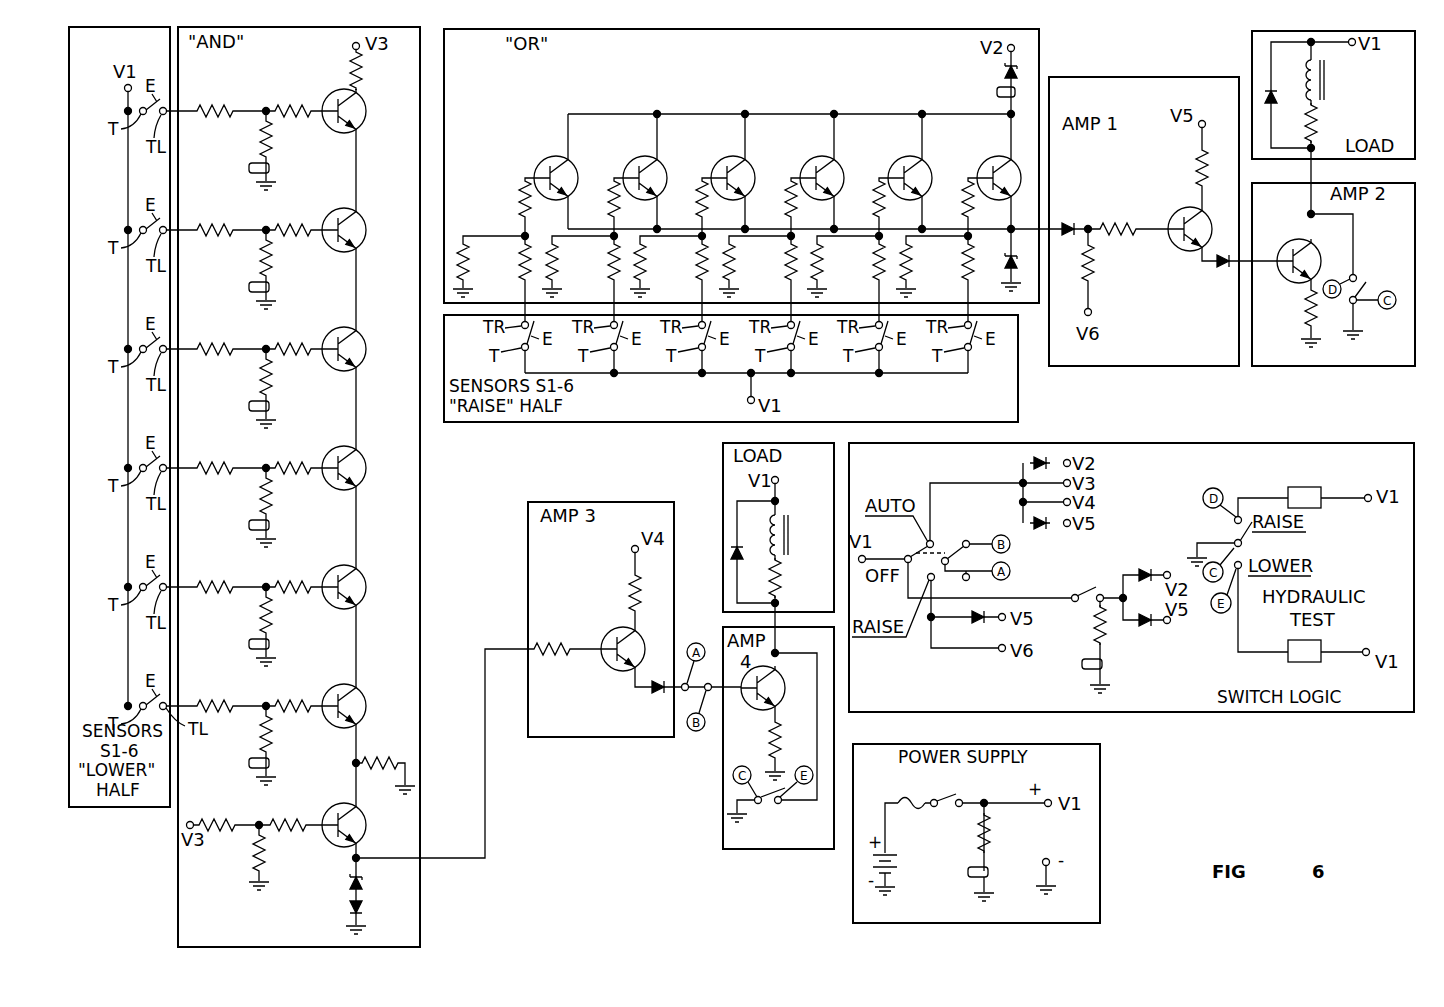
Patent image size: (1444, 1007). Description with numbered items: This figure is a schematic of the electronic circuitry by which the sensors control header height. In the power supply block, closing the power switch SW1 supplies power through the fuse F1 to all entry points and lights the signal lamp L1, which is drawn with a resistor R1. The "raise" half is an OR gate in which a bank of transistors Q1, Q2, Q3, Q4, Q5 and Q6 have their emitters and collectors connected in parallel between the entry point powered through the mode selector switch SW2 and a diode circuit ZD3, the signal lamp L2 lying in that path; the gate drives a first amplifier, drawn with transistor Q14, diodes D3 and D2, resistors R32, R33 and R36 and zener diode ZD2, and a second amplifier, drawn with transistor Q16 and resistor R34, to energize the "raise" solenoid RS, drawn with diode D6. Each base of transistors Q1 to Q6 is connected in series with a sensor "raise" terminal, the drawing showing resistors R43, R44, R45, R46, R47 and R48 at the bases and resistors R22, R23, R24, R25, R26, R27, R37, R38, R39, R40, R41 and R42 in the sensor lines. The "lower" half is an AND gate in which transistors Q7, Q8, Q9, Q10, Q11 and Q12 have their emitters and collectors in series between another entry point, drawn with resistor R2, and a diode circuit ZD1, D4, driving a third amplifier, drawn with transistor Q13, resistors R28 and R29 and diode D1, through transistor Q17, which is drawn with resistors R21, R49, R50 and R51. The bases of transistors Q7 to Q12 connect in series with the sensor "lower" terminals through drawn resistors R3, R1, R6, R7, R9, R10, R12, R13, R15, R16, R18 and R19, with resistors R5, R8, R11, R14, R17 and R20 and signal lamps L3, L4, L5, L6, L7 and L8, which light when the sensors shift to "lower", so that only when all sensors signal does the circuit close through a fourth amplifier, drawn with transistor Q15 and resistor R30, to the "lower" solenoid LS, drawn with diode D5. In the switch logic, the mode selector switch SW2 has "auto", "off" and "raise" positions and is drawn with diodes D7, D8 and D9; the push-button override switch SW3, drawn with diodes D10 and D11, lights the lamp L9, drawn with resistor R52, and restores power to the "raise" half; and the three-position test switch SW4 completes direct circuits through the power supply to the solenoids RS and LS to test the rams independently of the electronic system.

The resistor R1 is at (645, 469).
The resistor R2 is at (370, 70).
The resistor R3 is at (215, 101).
The resistor R5 is at (279, 139).
The resistor R6 is at (215, 220).
The resistor R7 is at (293, 220).
The resistor R8 is at (279, 258).
The resistor R9 is at (215, 339).
The resistor R10 is at (293, 339).
The resistor R11 is at (285, 377).
The resistor R12 is at (215, 458).
The resistor R13 is at (293, 458).
The resistor R14 is at (285, 496).
The resistor R15 is at (215, 577).
The resistor R16 is at (293, 577).
The resistor R17 is at (285, 615).
The resistor R18 is at (215, 696).
The resistor R19 is at (293, 696).
The resistor R20 is at (285, 734).
The resistor R21 is at (387, 764).
The resistor R22 is at (508, 262).
The resistor R23 is at (597, 262).
The resistor R24 is at (685, 262).
The resistor R25 is at (774, 262).
The resistor R26 is at (862, 262).
The resistor R27 is at (951, 262).
The resistor R28 is at (552, 637).
The resistor R29 is at (616, 593).
The resistor R30 is at (757, 740).
The resistor R32 is at (1118, 216).
The resistor R33 is at (1183, 168).
The resistor R34 is at (1291, 308).
The resistor R36 is at (1107, 263).
The resistor R37 is at (481, 260).
The resistor R38 is at (570, 260).
The resistor R39 is at (658, 260).
The resistor R40 is at (747, 260).
The resistor R41 is at (835, 260).
The resistor R42 is at (924, 260).
The resistor R43 is at (507, 199).
The resistor R44 is at (596, 199).
The resistor R45 is at (684, 199).
The resistor R46 is at (773, 199).
The resistor R47 is at (861, 199).
The resistor R48 is at (950, 199).
The resistor R49 is at (217, 814).
The resistor R50 is at (288, 814).
The resistor R51 is at (279, 853).
The resistor R52 is at (1081, 625).
The transistor Q1 is at (554, 170).
The transistor Q2 is at (643, 170).
The transistor Q3 is at (731, 170).
The transistor Q4 is at (820, 170).
The transistor Q5 is at (908, 170).
The transistor Q6 is at (997, 170).
The transistor Q7 is at (343, 100).
The transistor Q8 is at (343, 219).
The transistor Q9 is at (343, 338).
The transistor Q10 is at (341, 457).
The transistor Q11 is at (341, 576).
The transistor Q12 is at (341, 695).
The transistor Q13 is at (617, 663).
The transistor Q14 is at (1186, 217).
The transistor Q15 is at (781, 688).
The transistor Q16 is at (1294, 253).
The transistor Q17 is at (342, 815).
The signal lamp L1 is at (964, 871).
The signal lamp L2 is at (993, 92).
The signal lamp L3 is at (275, 167).
The signal lamp L4 is at (275, 286).
The signal lamp L5 is at (275, 405).
The signal lamp L6 is at (275, 524).
The signal lamp L7 is at (275, 643).
The signal lamp L8 is at (275, 762).
The signal lamp L9 is at (1107, 665).
The diode D1 is at (659, 697).
The diode D2 is at (1222, 272).
The diode D3 is at (1068, 216).
The diode D4 is at (371, 908).
The diode D5 is at (749, 564).
The diode D6 is at (1284, 106).
The diode D7 is at (1023, 455).
The diode D8 is at (1042, 534).
The diode D9 is at (977, 628).
The diode D10 is at (1148, 563).
The diode D11 is at (1149, 632).
The zener diode ZD1 is at (378, 883).
The zener diode ZD2 is at (997, 251).
The diode circuit ZD3 is at (989, 71).
The power switch SW1 is at (948, 790).
The mode selector switch SW2 is at (922, 552).
The override switch SW3 is at (1079, 575).
The test switch SW4 is at (1368, 253).
The fuse F1 is at (910, 791).
The raise solenoid RS is at (1327, 284).
The lower solenoid LS is at (1045, 588).